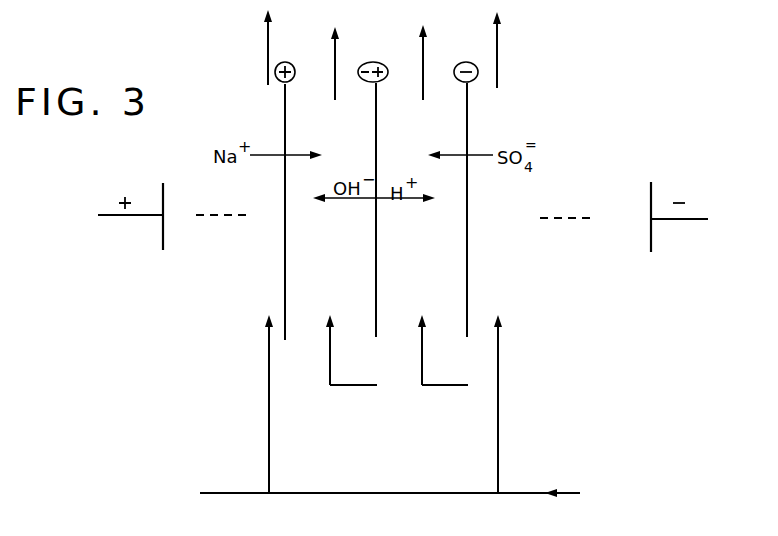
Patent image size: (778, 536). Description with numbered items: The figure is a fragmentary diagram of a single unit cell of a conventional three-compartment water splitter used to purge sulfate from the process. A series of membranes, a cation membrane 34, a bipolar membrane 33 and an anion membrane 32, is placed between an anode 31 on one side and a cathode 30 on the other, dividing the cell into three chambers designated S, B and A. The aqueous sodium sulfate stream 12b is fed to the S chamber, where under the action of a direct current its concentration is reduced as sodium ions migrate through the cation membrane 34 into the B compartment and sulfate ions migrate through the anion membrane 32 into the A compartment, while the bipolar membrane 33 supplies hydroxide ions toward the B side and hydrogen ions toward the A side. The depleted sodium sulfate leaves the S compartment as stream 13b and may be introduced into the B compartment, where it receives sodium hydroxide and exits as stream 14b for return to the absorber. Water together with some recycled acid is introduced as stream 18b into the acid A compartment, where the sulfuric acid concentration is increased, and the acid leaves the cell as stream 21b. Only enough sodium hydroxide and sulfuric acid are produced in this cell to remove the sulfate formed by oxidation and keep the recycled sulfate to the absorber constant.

The Na2SO4 stream 12b is at (375, 492).
The depleted Na2SO4 stream 13b is at (268, 40).
The NaOH stream 14b is at (335, 52).
The acid feed stream 18b is at (422, 345).
The H2SO4 product stream 21b is at (423, 52).
The cathode 30 is at (658, 226).
The anode 31 is at (148, 222).
The anion membrane 32 is at (470, 282).
The bipolar membrane 33 is at (379, 282).
The cation membrane 34 is at (288, 282).